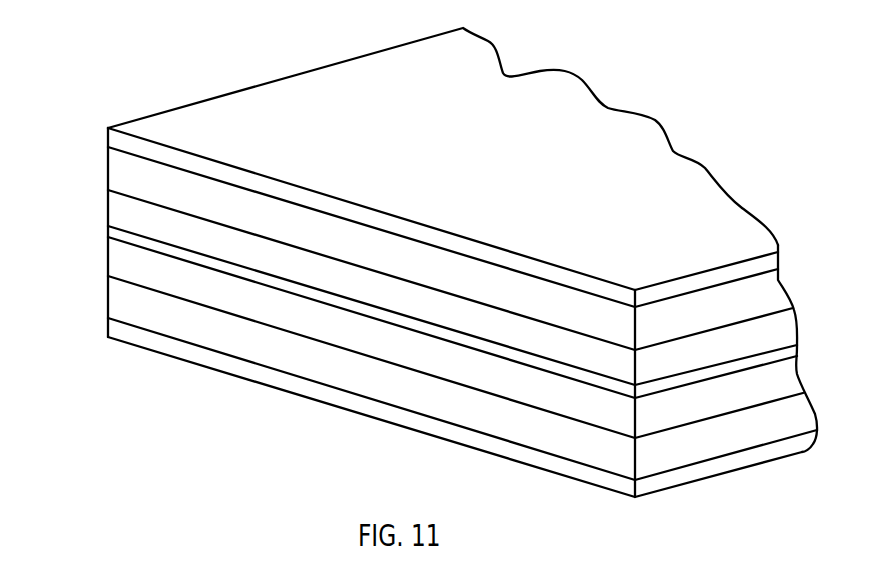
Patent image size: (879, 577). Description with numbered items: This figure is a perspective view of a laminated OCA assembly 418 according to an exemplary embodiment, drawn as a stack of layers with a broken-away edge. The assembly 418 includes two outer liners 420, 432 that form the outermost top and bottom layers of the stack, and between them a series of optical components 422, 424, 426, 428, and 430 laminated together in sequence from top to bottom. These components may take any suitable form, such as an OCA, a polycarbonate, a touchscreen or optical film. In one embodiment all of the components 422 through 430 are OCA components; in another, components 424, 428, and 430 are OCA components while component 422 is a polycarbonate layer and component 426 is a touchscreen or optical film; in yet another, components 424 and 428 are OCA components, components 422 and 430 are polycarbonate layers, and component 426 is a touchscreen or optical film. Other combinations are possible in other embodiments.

The laminated OCA assembly 418 is at (205, 47).
The outer liner 420 is at (115, 139).
The optical component 422 is at (112, 166).
The optical component 424 is at (112, 205).
The optical component 426 is at (112, 232).
The optical component 428 is at (112, 262).
The optical component 430 is at (112, 297).
The outer liner 432 is at (117, 330).